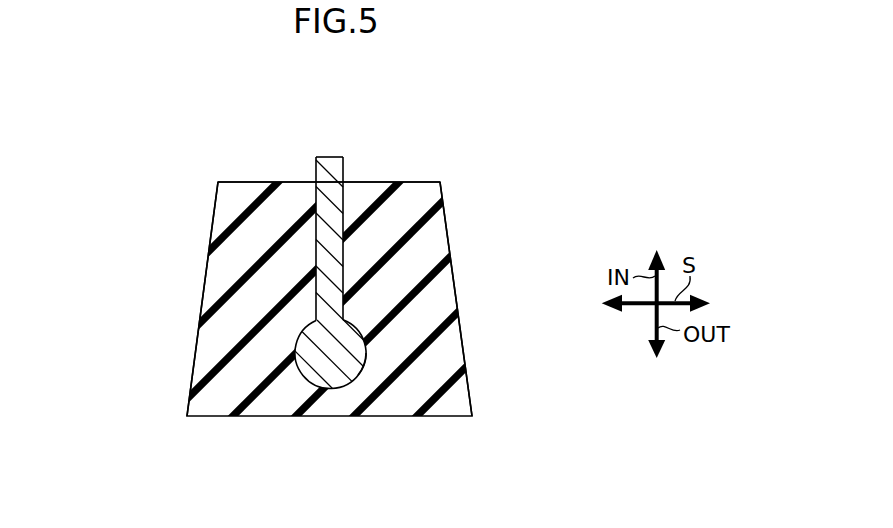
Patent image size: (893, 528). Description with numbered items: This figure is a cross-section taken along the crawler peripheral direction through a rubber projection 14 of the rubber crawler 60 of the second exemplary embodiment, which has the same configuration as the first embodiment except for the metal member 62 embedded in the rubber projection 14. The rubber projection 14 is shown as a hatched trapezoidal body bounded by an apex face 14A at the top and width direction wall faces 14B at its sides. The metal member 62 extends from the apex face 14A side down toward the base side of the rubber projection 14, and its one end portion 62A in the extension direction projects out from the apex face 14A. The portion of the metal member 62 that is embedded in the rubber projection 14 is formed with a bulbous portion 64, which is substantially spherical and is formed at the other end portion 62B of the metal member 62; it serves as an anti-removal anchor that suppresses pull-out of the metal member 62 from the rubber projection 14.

The rubber crawler 60 is at (168, 154).
The rubber projection 14 is at (439, 181).
The apex face 14A is at (407, 182).
The width direction wall faces 14B is at (205, 285).
The metal member 62 is at (335, 156).
The one end portion 62A is at (317, 156).
The another end portion 62B is at (333, 389).
The bulbous portion 64 is at (363, 361).